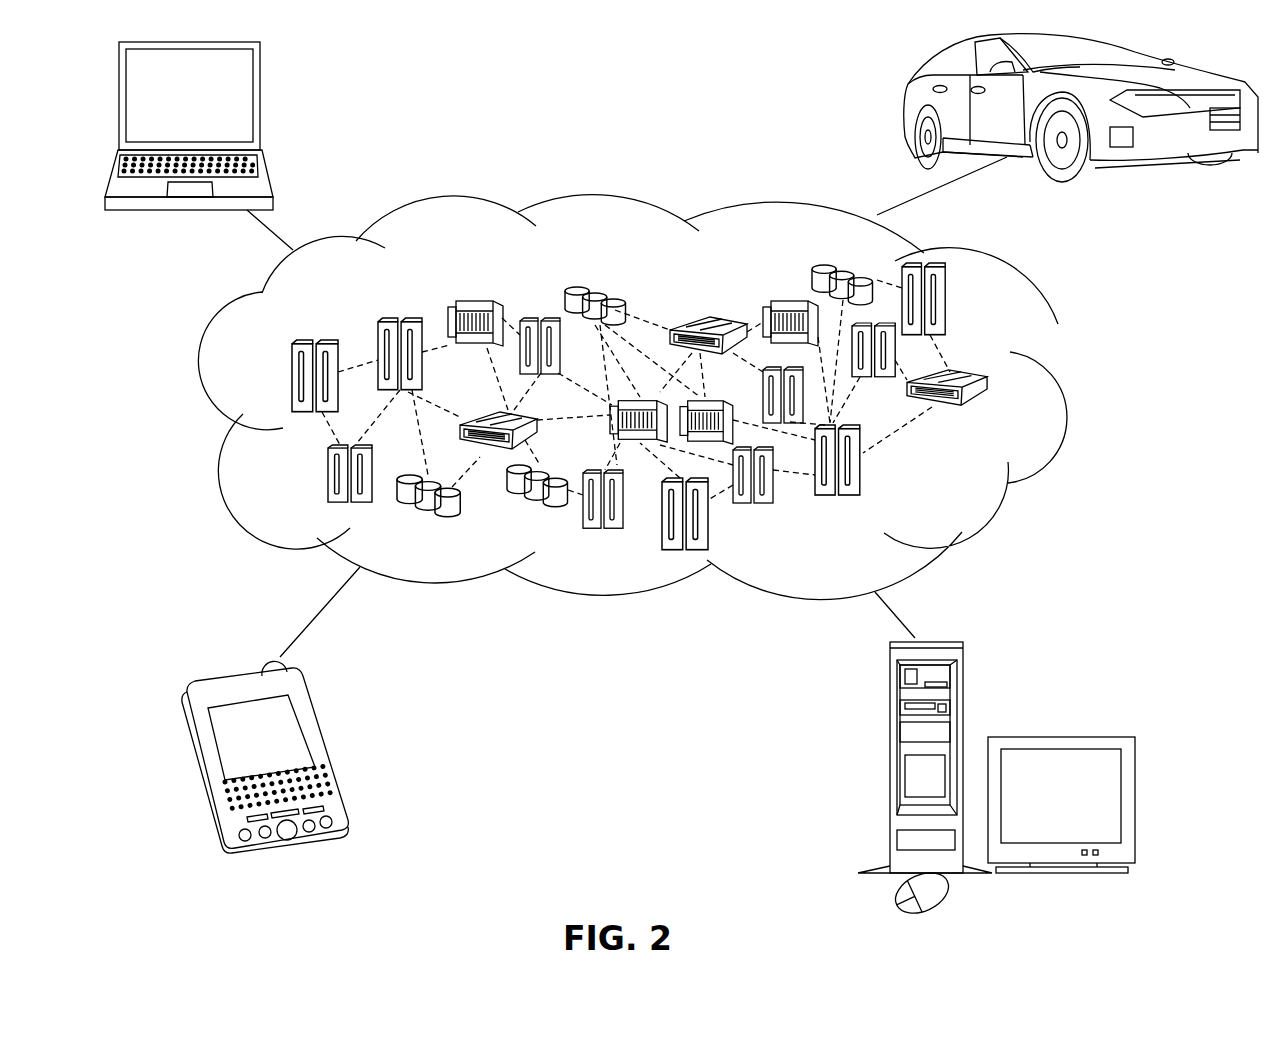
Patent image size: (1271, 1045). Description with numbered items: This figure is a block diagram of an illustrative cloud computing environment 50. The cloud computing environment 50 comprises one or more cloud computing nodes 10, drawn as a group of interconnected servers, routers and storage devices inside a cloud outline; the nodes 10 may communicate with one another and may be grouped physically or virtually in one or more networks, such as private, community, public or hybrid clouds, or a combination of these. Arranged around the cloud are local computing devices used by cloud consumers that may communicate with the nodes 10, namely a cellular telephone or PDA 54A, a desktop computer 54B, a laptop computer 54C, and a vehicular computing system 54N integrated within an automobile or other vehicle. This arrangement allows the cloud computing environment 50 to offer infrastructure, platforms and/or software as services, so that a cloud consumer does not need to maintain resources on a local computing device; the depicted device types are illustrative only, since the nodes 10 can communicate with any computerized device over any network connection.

The cloud computing node 10 is at (965, 489).
The cloud computing environment 50 is at (1062, 386).
The cellular telephone or PDA 54A is at (316, 718).
The desktop computer 54B is at (888, 702).
The laptop computer 54C is at (262, 80).
The vehicular computing system 54N is at (908, 97).